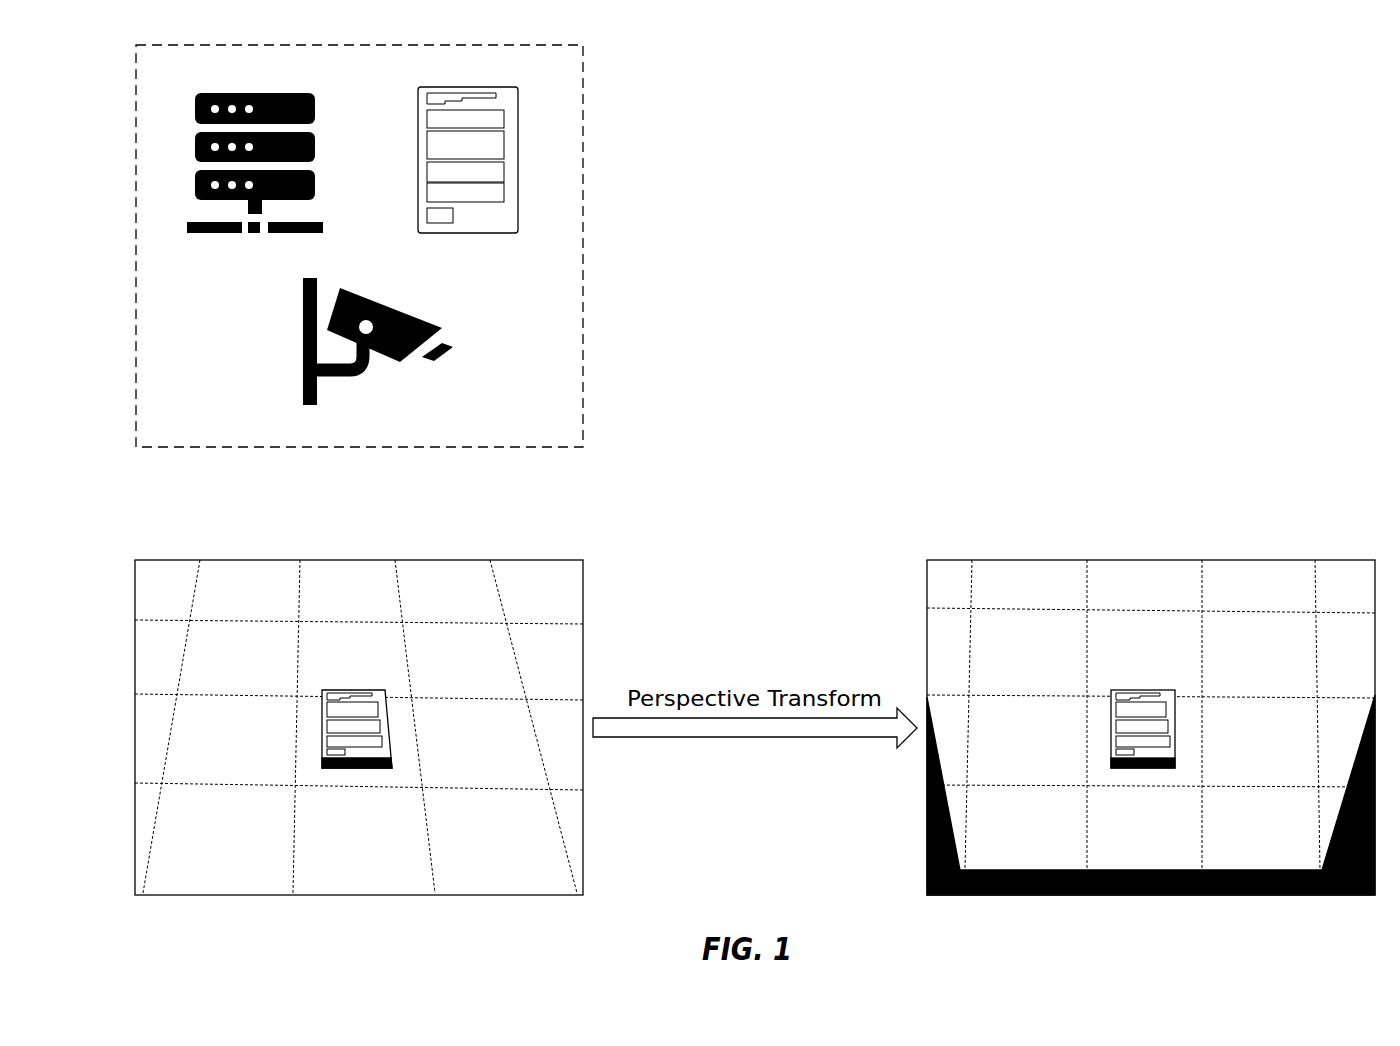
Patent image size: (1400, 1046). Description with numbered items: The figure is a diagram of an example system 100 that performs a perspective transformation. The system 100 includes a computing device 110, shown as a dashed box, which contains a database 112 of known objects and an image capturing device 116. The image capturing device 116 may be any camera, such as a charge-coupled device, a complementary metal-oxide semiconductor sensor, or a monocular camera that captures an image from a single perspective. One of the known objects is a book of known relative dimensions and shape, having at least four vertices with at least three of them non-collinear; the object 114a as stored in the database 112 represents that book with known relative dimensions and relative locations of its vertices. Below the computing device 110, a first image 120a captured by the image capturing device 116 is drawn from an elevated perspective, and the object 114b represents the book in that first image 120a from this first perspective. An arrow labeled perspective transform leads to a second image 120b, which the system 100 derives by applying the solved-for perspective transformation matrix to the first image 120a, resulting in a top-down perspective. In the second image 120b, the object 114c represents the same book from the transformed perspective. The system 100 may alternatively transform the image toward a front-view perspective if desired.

The system 100 is at (1226, 88).
The computing device 110 is at (583, 67).
The database 112 is at (195, 183).
The object as stored in the database 114a is at (518, 182).
The object in the first image 114b is at (337, 690).
The object in the second image 114c is at (1127, 690).
The image capturing device 116 is at (440, 358).
The first image 120a is at (448, 560).
The second image 120b is at (1238, 560).